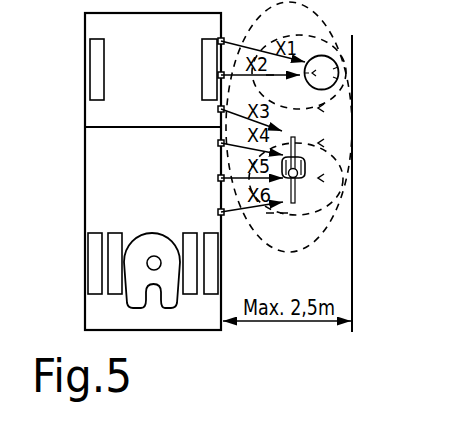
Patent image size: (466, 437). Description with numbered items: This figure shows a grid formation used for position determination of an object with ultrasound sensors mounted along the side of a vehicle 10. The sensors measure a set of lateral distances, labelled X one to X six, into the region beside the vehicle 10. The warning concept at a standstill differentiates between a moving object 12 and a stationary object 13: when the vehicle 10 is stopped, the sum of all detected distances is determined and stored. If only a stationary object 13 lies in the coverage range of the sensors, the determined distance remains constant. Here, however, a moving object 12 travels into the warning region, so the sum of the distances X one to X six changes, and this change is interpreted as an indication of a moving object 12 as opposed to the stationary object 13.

The vehicle 10 is at (78, 185).
The moving object 12 is at (305, 165).
The stationary object 13 is at (336, 71).